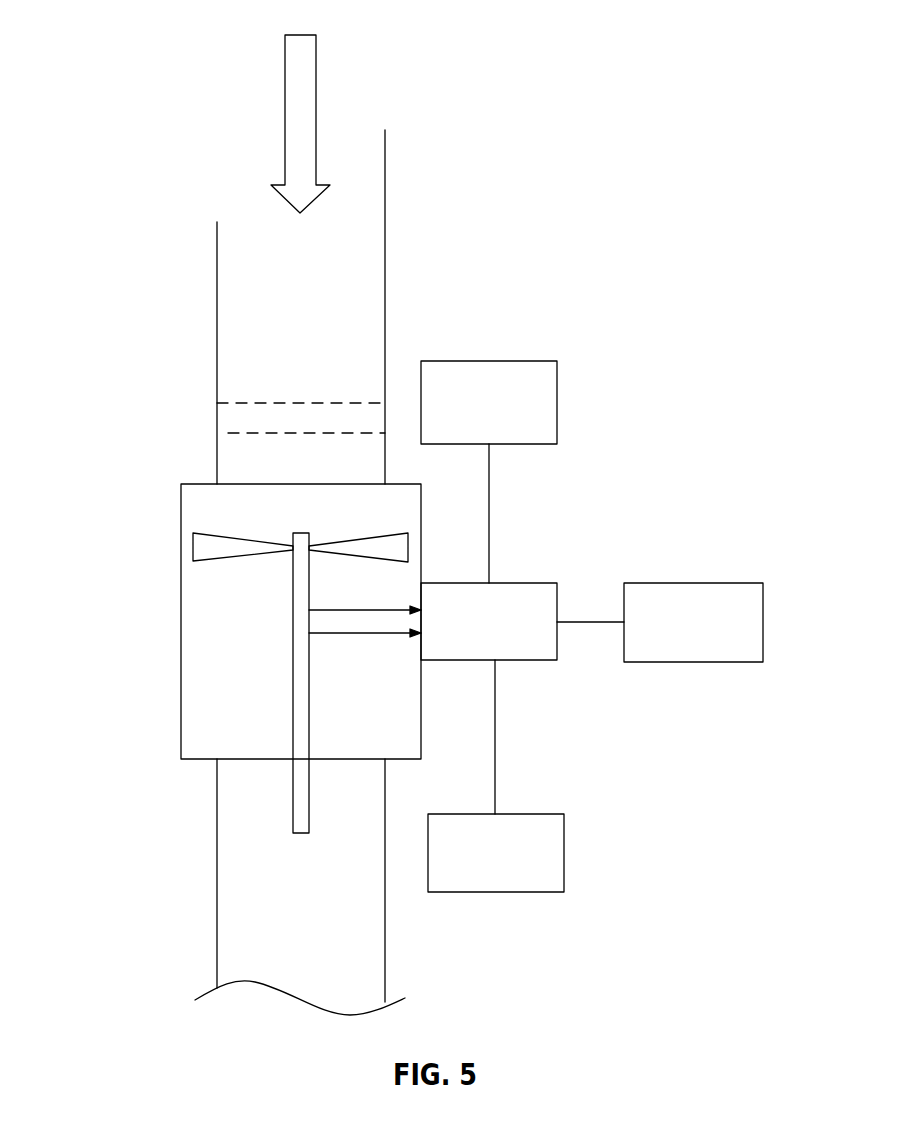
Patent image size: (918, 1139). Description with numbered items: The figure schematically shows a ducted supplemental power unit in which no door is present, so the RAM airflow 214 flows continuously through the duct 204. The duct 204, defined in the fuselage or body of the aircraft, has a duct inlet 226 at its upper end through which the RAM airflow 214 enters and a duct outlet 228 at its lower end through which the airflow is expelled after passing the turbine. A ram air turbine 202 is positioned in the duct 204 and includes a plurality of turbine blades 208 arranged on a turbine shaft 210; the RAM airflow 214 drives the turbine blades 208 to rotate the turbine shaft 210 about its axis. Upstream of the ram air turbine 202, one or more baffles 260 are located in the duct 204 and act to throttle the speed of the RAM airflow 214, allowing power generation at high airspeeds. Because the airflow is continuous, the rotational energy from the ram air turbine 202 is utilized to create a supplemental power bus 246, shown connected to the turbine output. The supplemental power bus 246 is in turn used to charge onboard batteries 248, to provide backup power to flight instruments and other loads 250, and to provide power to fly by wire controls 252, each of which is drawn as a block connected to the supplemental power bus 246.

The ram air turbine 202 is at (494, 48).
The duct 204 is at (218, 297).
The turbine blades 208 is at (208, 545).
The turbine shaft 210 is at (300, 721).
The RAM airflow 214 is at (300, 125).
The duct inlet 226 is at (234, 208).
The duct outlet 228 is at (232, 943).
The supplemental power bus 246 is at (510, 583).
The onboard batteries 248 is at (487, 361).
The loads 250 is at (690, 583).
The fly by wire controls 252 is at (515, 814).
The baffles 260 is at (240, 421).